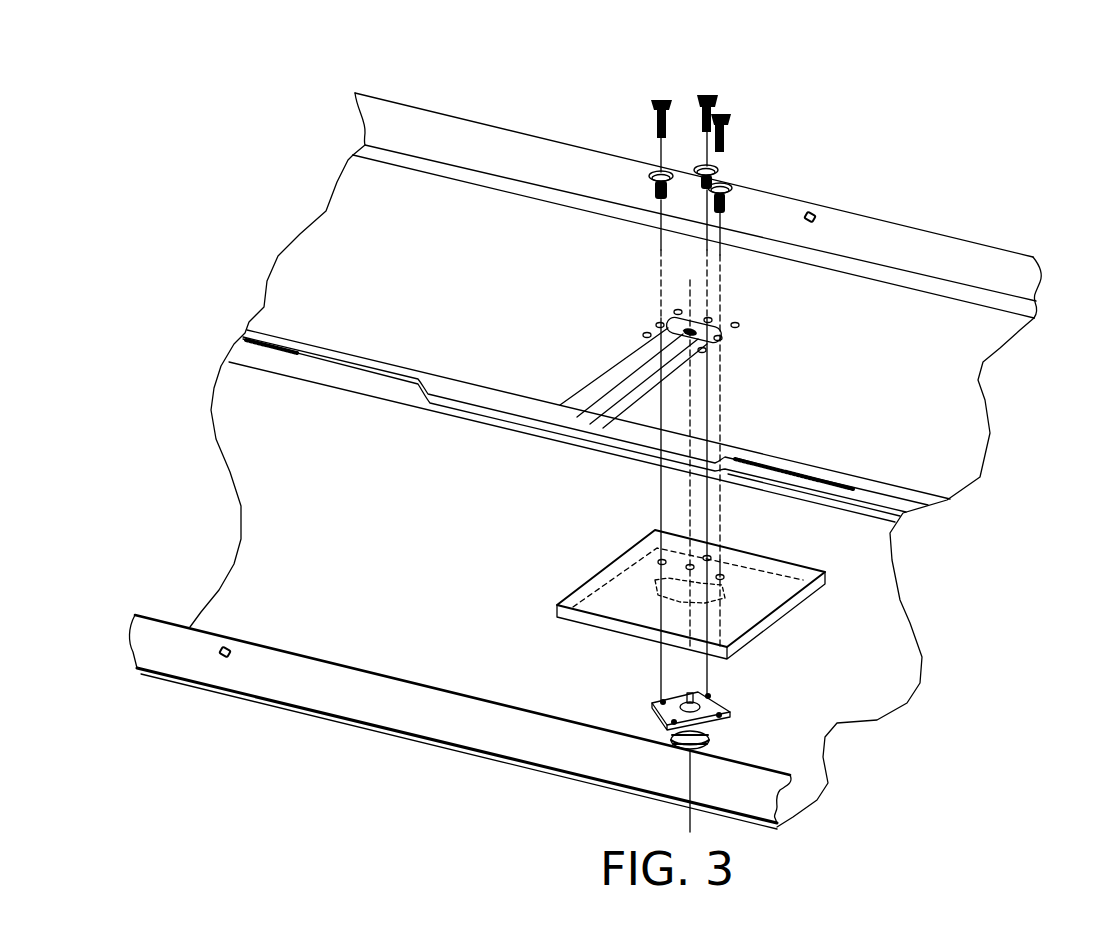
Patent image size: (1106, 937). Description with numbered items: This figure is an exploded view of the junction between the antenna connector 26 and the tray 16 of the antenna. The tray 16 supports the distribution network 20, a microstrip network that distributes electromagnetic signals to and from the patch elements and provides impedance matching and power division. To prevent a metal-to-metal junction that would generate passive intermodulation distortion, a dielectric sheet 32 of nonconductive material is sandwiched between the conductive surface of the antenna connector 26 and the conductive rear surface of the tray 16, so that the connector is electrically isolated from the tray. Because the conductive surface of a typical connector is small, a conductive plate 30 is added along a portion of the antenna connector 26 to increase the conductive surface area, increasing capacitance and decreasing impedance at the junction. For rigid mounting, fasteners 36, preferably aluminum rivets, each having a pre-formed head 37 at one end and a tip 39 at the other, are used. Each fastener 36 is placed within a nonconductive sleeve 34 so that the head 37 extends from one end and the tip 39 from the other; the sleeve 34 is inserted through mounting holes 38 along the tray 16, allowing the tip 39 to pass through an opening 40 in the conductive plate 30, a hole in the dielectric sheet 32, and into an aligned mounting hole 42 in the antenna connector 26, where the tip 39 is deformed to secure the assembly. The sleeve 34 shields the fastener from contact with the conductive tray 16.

The tray 16 is at (940, 233).
The distribution network 20 is at (893, 482).
The antenna connector 26 is at (771, 744).
The conductive plate 30 is at (778, 630).
The dielectric sheet 32 is at (720, 594).
The sleeve 34 is at (730, 188).
The fastener 36 is at (717, 112).
The fastener head 37 is at (652, 102).
The mounting holes 38 is at (660, 322).
The fastener tip 39 is at (658, 140).
The opening 40 is at (729, 590).
The mounting hole 42 is at (663, 700).